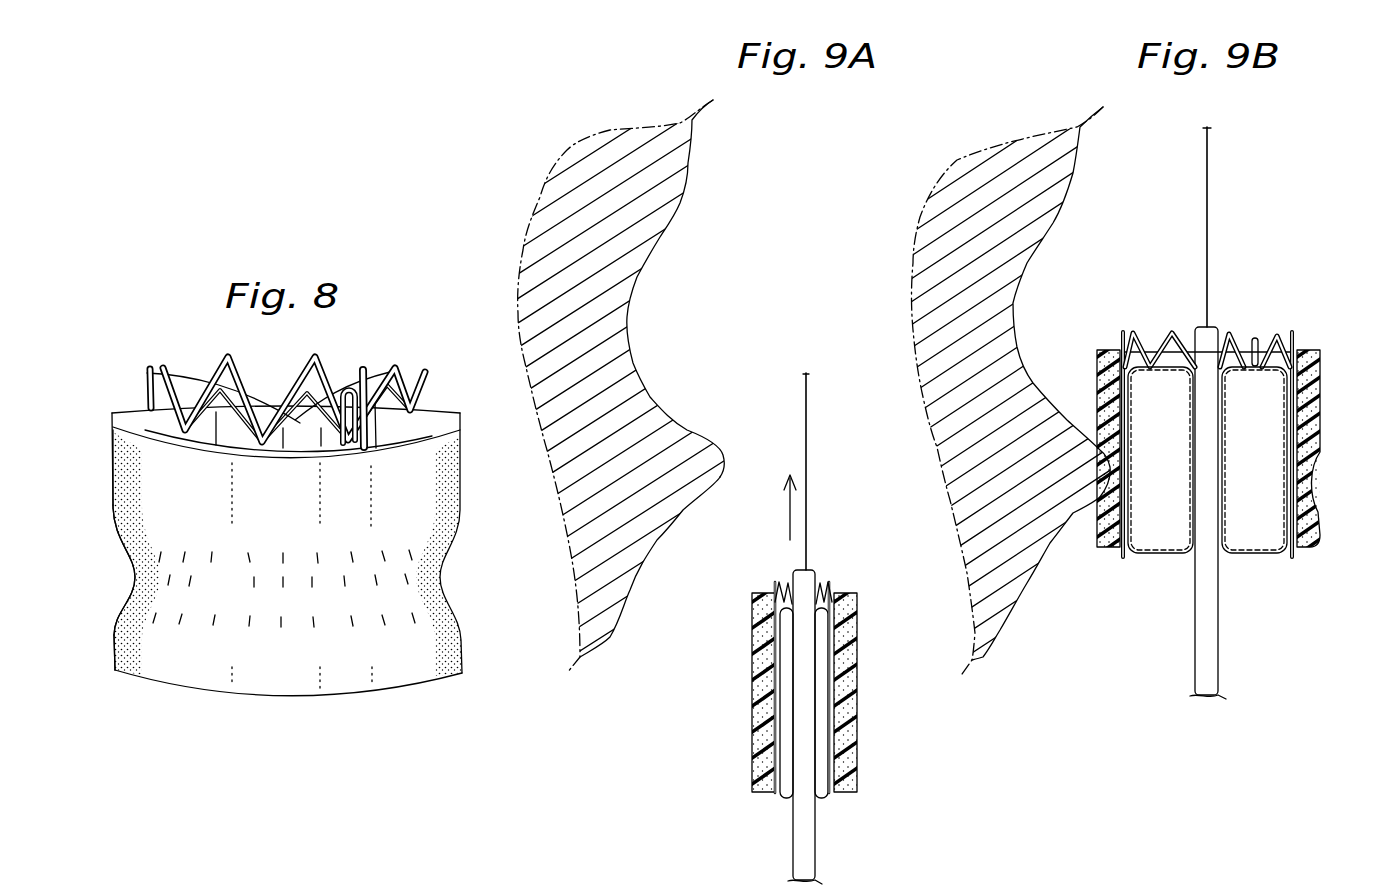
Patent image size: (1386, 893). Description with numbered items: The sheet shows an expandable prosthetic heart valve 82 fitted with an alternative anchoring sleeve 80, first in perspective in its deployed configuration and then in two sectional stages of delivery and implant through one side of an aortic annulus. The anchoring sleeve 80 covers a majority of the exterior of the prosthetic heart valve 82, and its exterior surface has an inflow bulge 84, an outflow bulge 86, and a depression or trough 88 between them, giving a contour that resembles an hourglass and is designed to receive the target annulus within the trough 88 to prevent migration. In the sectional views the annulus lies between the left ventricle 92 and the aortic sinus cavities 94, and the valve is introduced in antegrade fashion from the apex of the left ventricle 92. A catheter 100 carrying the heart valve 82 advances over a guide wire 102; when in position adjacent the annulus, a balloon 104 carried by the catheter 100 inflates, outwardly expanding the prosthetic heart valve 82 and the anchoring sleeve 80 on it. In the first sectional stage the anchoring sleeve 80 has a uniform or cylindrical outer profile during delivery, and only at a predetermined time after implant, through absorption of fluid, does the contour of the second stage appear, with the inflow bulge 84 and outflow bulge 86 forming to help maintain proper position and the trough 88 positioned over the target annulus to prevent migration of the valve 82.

In FIG. 8, the anchoring sleeve 80 is at (465, 655).
In FIG. 9A, the anchoring sleeve 80 is at (857, 748).
In FIG. 9B, the anchoring sleeve 80 is at (1320, 381).
In FIG. 8, the expandable prosthetic heart valve 82 is at (404, 362).
In FIG. 9A, the expandable prosthetic heart valve 82 is at (828, 577).
In FIG. 9B, the expandable prosthetic heart valve 82 is at (1253, 340).
In FIG. 8, the inflow bulge 84 is at (114, 668).
In FIG. 8, the outflow bulge 86 is at (113, 475).
In FIG. 8, the trough 88 is at (137, 578).
In FIG. 9A, the left ventricle 92 is at (625, 598).
In FIG. 9A, the aortic sinus cavities 94 is at (628, 297).
In FIG. 9A, the catheter 100 is at (815, 857).
In FIG. 9B, the catheter 100 is at (1220, 651).
In FIG. 9A, the guide wire 102 is at (807, 443).
In FIG. 9B, the balloon 104 is at (1153, 553).